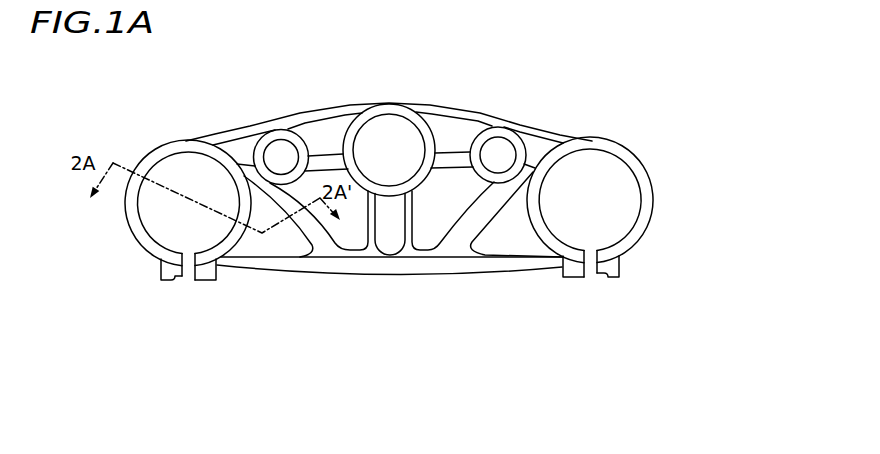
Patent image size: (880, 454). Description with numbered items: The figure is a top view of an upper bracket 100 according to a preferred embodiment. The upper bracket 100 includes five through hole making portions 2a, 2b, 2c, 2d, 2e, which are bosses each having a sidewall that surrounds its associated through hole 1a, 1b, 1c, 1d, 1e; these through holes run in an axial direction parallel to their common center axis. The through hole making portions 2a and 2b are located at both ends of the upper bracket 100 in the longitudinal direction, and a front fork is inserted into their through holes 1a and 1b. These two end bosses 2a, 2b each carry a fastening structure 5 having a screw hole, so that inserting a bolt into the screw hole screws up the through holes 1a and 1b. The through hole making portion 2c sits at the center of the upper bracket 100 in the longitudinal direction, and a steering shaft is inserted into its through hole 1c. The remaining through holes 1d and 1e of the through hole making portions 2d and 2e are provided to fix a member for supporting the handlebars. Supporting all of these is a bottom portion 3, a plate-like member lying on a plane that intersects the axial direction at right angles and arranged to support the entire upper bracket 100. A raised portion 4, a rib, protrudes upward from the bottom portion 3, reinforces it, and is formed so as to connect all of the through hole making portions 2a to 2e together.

The upper bracket 100 is at (411, 191).
The through hole 1a is at (177, 170).
The through hole 1b is at (609, 170).
The through hole 1c is at (387, 133).
The through hole 1d is at (283, 138).
The through hole 1e is at (501, 140).
The through hole making portion 2a is at (129, 228).
The through hole making portion 2b is at (653, 188).
The through hole making portion 2c is at (413, 118).
The through hole making portion 2d is at (268, 136).
The through hole making portion 2e is at (518, 130).
The bottom portion 3 is at (252, 247).
The raised portion 4 is at (308, 226).
The fastening structure 5 is at (161, 286).